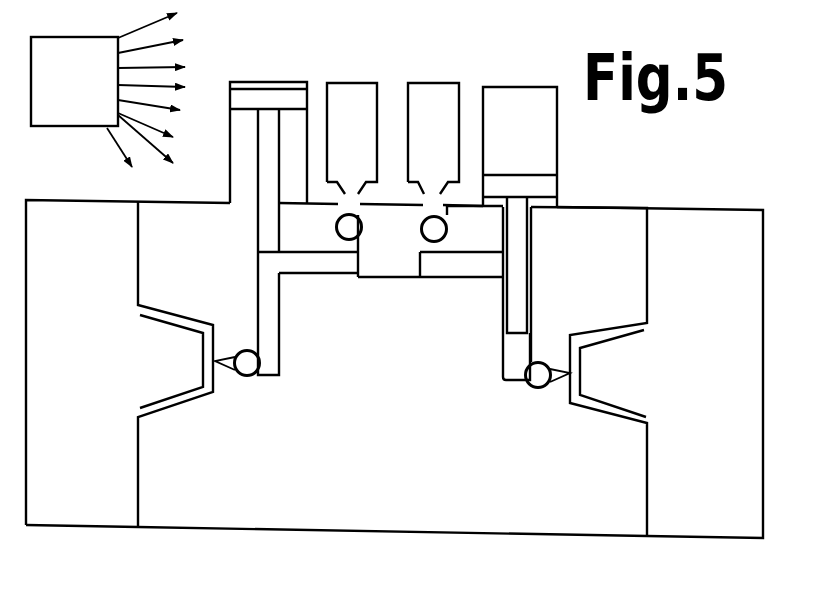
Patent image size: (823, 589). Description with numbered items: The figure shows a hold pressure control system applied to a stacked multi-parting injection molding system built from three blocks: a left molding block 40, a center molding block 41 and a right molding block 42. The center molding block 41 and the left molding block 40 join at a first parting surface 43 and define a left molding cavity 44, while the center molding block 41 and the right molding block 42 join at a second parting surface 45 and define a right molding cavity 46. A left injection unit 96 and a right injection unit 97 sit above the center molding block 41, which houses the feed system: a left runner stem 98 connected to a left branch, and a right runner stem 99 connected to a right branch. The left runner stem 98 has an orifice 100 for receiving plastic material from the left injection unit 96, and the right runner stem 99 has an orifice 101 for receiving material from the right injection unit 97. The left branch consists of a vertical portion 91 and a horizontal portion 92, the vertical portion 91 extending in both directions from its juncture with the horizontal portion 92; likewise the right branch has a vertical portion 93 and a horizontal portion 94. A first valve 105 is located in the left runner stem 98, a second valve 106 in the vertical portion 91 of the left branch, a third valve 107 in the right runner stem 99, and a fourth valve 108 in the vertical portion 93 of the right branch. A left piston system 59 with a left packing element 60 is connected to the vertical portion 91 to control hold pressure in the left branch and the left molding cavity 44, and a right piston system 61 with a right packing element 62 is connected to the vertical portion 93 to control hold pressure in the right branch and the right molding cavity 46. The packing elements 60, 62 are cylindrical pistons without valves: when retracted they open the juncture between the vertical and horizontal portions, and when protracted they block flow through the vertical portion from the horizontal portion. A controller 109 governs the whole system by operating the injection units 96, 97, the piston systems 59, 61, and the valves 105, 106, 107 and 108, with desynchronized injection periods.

The left molding block 40 is at (88, 527).
The center molding block 41 is at (413, 533).
The right molding block 42 is at (703, 540).
The first parting surface 43 is at (142, 250).
The left molding cavity 44 is at (165, 317).
The second parting surface 45 is at (648, 250).
The right molding cavity 46 is at (597, 335).
The left piston system 59 is at (307, 100).
The left packing element 60 is at (270, 225).
The right piston system 61 is at (560, 183).
The right packing element 62 is at (518, 270).
The vertical portion of the left branch 91 is at (282, 330).
The horizontal portion of the left branch 92 is at (304, 274).
The vertical portion of the right branch 93 is at (503, 343).
The horizontal portion of the right branch 94 is at (455, 279).
The left injection unit 96 is at (378, 92).
The right injection unit 97 is at (462, 92).
The left runner stem 98 is at (360, 216).
The right runner stem 99 is at (447, 222).
The orifice 100 is at (340, 204).
The orifice 101 is at (362, 232).
The first valve 105 is at (350, 240).
The second valve 106 is at (247, 377).
The third valve 107 is at (432, 253).
The fourth valve 108 is at (532, 388).
The controller 109 is at (77, 115).